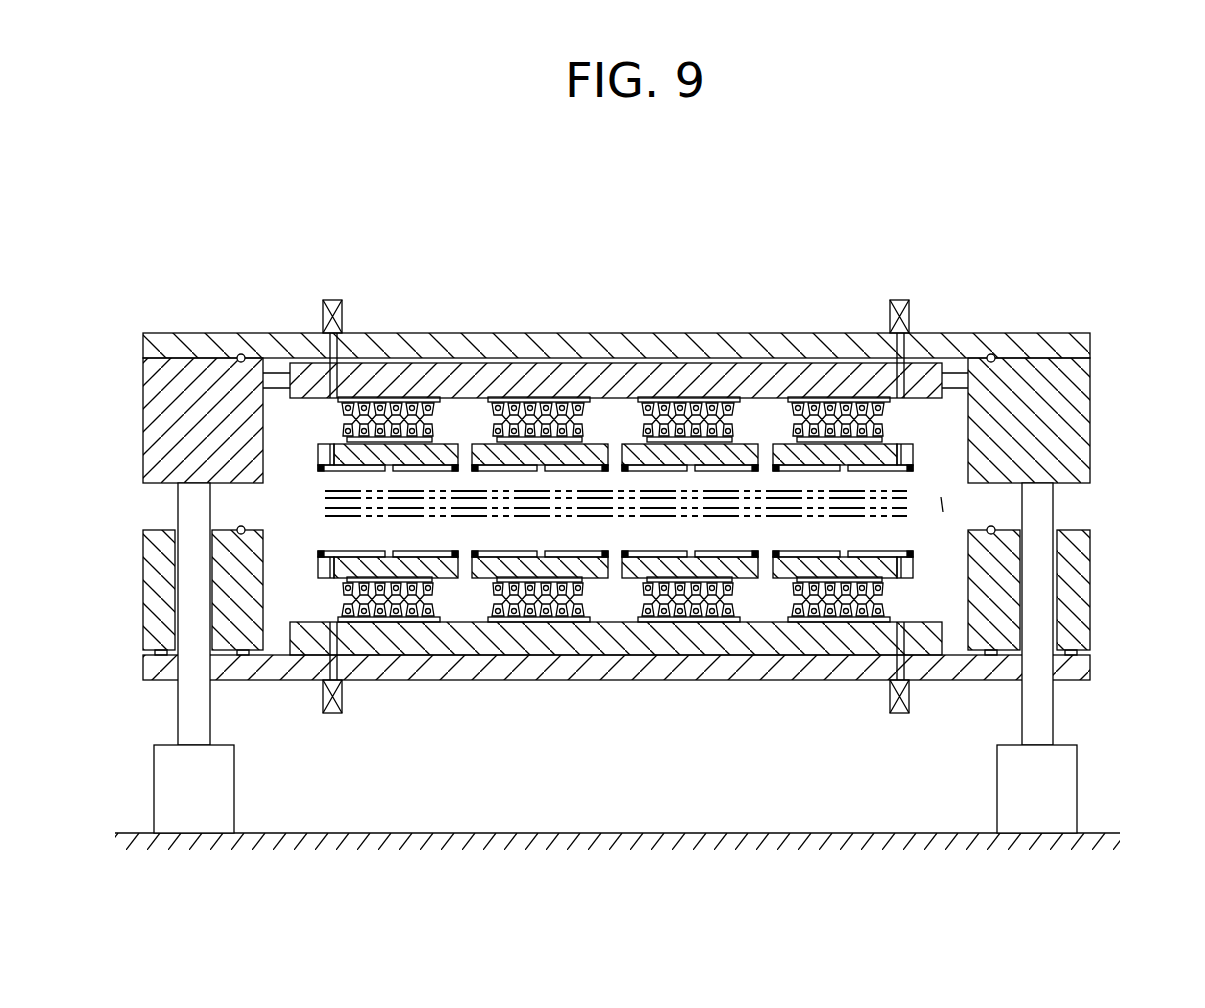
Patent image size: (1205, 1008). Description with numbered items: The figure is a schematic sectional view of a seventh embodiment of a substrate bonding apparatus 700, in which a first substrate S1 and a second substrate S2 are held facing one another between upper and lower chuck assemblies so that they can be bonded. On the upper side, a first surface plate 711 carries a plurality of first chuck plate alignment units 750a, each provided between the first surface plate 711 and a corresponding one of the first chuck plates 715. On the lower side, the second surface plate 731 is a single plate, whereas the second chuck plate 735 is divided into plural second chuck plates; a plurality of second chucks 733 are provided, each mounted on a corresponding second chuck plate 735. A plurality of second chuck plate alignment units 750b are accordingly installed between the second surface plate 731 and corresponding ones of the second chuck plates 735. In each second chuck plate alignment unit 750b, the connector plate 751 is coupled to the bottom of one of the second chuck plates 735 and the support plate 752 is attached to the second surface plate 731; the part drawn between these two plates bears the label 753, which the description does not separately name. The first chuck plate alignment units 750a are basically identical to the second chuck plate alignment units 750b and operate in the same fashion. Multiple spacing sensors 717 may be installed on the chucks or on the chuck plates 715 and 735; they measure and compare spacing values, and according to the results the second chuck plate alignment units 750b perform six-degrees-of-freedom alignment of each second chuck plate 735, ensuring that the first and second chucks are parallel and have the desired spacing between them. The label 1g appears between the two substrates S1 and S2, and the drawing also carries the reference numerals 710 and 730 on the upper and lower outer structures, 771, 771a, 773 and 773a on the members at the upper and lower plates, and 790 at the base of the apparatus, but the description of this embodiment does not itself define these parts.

The substrate bonding apparatus 700 is at (662, 212).
The upper frame 710 is at (1093, 406).
The first surface plate 711 is at (290, 397).
The first chuck plate 715 is at (318, 452).
The spacing sensor 717 is at (318, 463).
The upper fixing member 771 is at (343, 307).
The upper fixing pin 771a is at (342, 386).
The first chuck plate alignment unit 750a is at (752, 422).
The second chuck plate alignment unit 750b is at (614, 680).
The connector plate 751 is at (647, 582).
The support plate 752 is at (710, 622).
The elastic body 753 is at (615, 743).
The lower fixing member 773 is at (347, 466).
The lower fixing pin 773a is at (338, 662).
The second chuck 733 is at (318, 553).
The second chuck plate 735 is at (318, 565).
The second surface plate 731 is at (303, 640).
The lower frame 730 is at (1093, 600).
The support leg 790 is at (236, 772).
The first substrate S1 is at (893, 493).
The second substrate S2 is at (893, 518).
The gap between substrates 1g is at (943, 503).